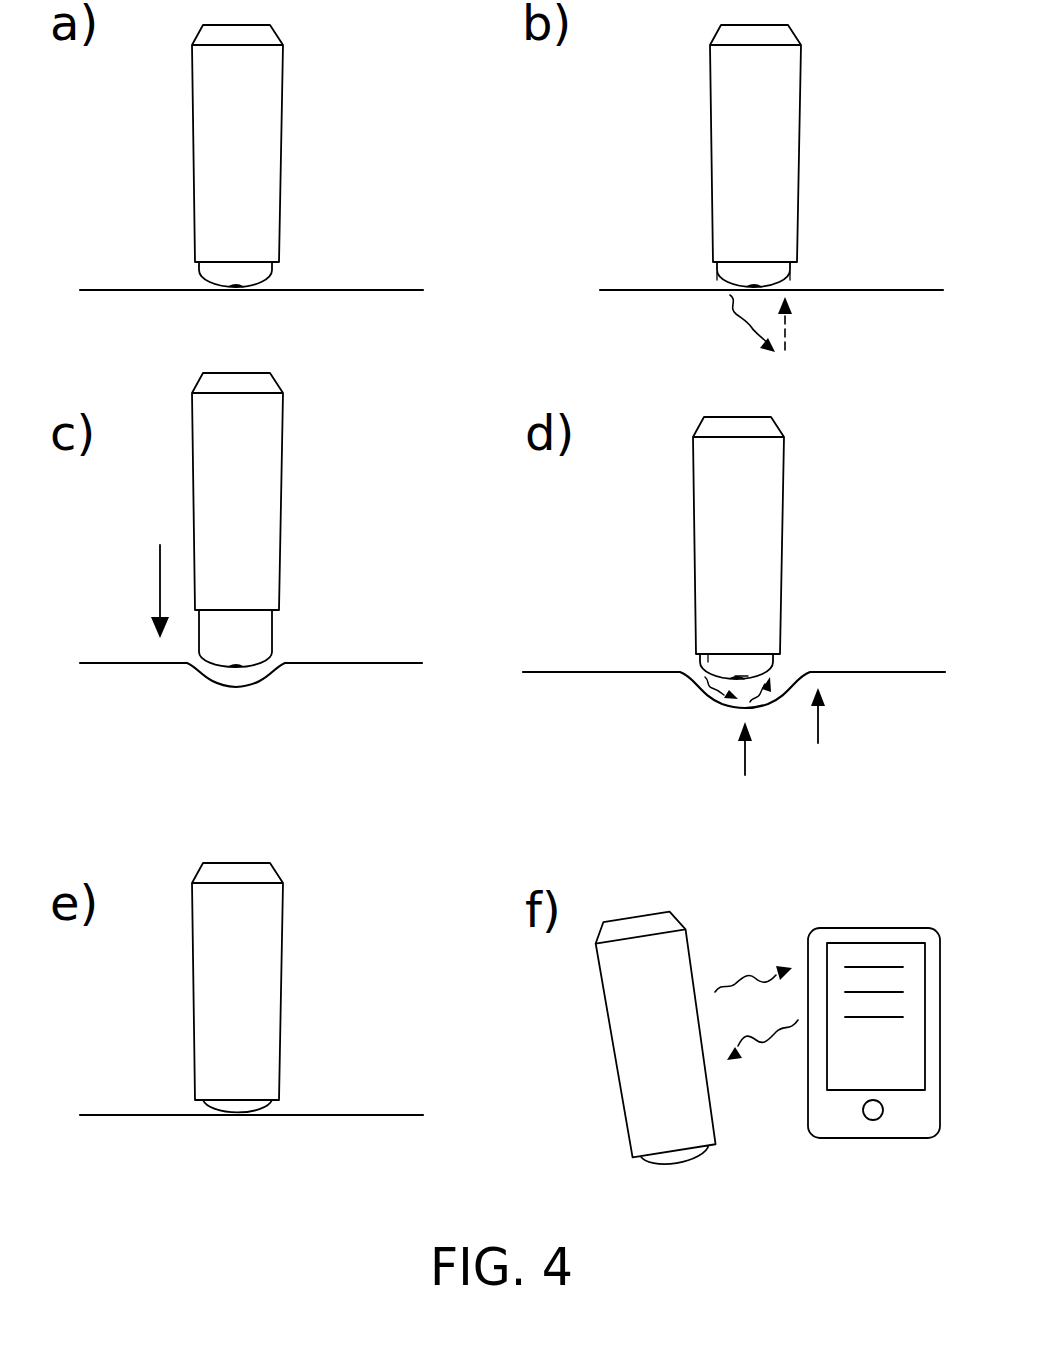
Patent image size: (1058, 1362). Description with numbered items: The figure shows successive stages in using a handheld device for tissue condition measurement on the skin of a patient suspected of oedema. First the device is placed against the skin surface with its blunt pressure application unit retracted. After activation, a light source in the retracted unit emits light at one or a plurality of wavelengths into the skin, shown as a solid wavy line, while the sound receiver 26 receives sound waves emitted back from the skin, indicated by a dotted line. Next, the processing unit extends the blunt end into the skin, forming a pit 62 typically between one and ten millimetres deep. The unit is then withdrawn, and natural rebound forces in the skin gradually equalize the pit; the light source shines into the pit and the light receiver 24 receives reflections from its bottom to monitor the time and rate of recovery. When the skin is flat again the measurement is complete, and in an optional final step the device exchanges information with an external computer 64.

The light receiver 24 is at (740, 667).
The sound receiver 26 is at (773, 277).
The pit 62 is at (262, 683).
The external computer 64 is at (890, 928).